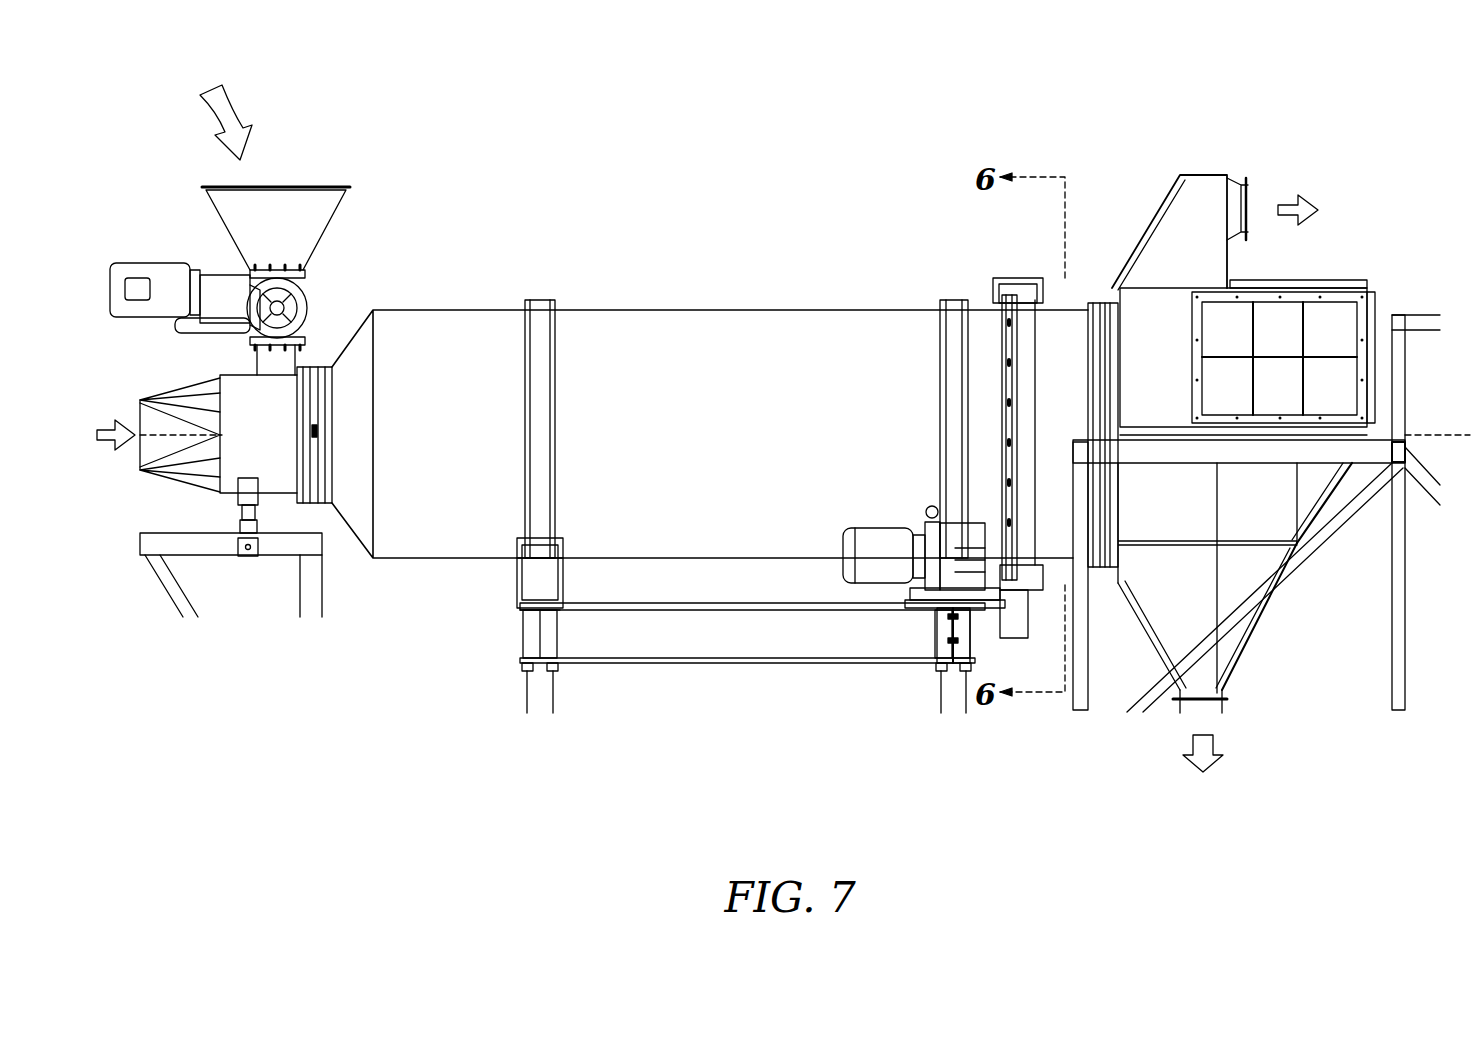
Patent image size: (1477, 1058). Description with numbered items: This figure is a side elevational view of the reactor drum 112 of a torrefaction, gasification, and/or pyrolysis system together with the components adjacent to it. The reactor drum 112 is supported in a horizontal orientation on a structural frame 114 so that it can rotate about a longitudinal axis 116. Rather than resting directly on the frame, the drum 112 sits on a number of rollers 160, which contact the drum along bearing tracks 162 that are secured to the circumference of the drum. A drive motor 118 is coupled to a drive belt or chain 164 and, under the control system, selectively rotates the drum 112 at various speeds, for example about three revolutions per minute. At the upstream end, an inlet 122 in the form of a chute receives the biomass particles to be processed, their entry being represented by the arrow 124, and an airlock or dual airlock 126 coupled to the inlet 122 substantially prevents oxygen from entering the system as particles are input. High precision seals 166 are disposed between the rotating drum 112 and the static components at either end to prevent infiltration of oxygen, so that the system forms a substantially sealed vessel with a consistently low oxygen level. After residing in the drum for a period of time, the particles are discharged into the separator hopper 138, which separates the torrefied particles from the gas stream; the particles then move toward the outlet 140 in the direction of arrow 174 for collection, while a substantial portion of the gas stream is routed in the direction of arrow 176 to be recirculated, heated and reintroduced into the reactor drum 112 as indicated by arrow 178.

The reactor drum 112 is at (400, 542).
The structural frame 114 is at (653, 643).
The longitudinal axis 116 is at (1440, 433).
The drive motor 118 is at (968, 563).
The inlet 122 is at (294, 212).
The arrow (particle input) 124 is at (240, 105).
The airlock or dual airlock 126 is at (236, 293).
The separator hopper 138 is at (1200, 195).
The outlet 140 is at (1185, 722).
The rollers 160 is at (520, 578).
The bearing tracks 162 is at (540, 313).
The drive belt or chain 164 is at (1015, 320).
The high precision seals 166 is at (322, 367).
The arrow (particle discharge direction) 174 is at (1215, 752).
The arrow (gas stream routing direction) 176 is at (1293, 192).
The arrow (gas reintroduction direction) 178 is at (115, 420).